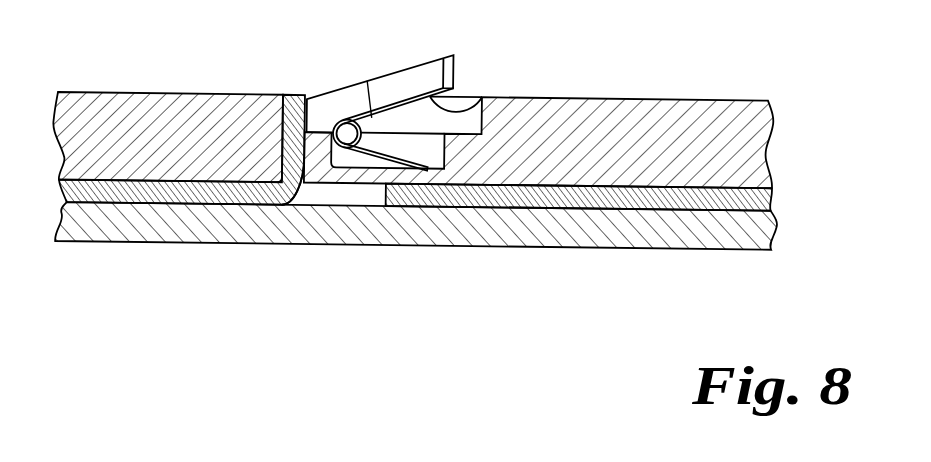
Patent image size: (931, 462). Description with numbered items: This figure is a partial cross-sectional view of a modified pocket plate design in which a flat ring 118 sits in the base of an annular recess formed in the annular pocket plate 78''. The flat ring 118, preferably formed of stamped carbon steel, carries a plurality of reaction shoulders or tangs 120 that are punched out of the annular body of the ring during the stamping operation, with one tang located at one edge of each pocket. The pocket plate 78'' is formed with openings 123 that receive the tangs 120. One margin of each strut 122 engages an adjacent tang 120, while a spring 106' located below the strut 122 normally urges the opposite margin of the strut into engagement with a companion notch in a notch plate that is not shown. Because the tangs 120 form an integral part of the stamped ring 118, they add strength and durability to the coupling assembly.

The annular pocket plate 78'' is at (413, 98).
The reaction tang 120 is at (285, 120).
The strut 122 is at (480, 100).
The opening 123 is at (304, 163).
The spring 106' is at (439, 222).
The flat ring 118 is at (608, 200).